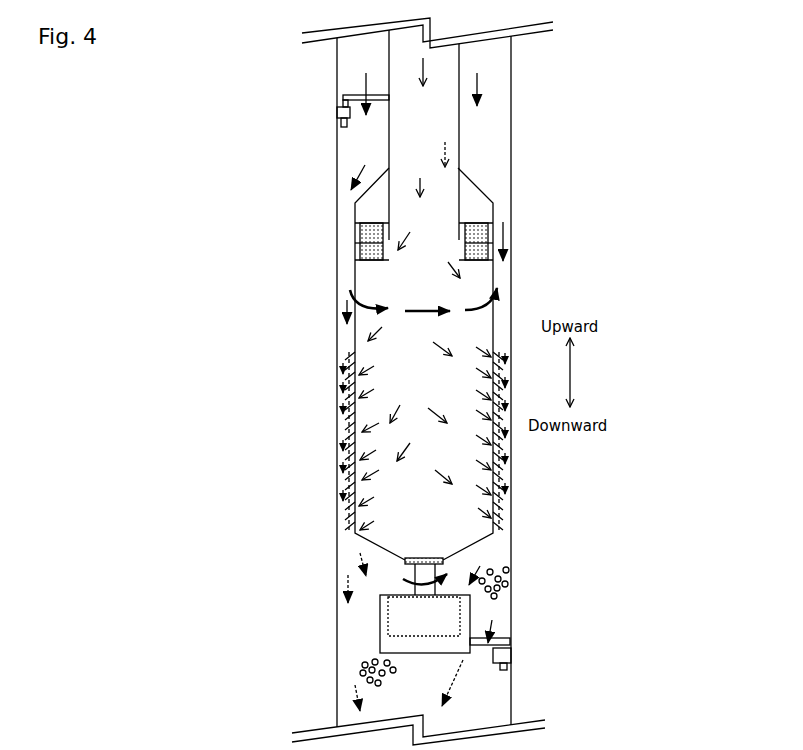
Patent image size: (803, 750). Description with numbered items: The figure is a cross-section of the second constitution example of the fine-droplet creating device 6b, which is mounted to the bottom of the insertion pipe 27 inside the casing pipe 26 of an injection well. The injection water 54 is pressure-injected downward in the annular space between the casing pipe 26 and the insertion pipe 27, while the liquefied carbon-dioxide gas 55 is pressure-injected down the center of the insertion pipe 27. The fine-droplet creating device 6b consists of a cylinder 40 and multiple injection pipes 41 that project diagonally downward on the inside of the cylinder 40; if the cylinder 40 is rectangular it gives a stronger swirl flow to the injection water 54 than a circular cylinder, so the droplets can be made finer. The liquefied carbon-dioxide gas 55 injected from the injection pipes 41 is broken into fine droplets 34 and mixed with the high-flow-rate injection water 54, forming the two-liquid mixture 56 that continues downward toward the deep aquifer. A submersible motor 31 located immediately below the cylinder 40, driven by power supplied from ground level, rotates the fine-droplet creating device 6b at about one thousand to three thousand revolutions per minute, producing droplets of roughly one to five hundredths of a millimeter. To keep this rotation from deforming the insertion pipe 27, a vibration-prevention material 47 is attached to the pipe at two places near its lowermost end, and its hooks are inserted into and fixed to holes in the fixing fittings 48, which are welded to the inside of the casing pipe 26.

The casing pipe 26 is at (513, 80).
The insertion pipe 27 is at (460, 137).
The submersible motor 31 is at (380, 621).
The fine droplets 34 is at (508, 587).
The cylinder 40 is at (357, 250).
The injection pipes 41 is at (337, 420).
The vibration-prevention material 47 is at (348, 94).
The fixing fittings 48 is at (337, 110).
The injection water 54 is at (496, 237).
The liquefied carbon-dioxide gas 55 is at (445, 142).
The two-liquid mixture 56 is at (340, 580).
The fine-droplet creating device 6b is at (629, 166).